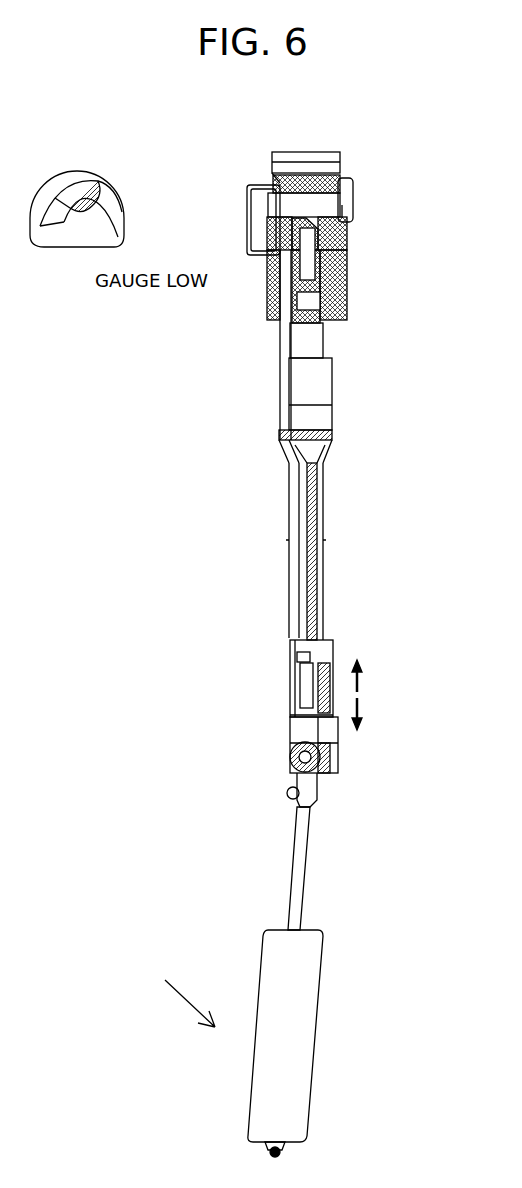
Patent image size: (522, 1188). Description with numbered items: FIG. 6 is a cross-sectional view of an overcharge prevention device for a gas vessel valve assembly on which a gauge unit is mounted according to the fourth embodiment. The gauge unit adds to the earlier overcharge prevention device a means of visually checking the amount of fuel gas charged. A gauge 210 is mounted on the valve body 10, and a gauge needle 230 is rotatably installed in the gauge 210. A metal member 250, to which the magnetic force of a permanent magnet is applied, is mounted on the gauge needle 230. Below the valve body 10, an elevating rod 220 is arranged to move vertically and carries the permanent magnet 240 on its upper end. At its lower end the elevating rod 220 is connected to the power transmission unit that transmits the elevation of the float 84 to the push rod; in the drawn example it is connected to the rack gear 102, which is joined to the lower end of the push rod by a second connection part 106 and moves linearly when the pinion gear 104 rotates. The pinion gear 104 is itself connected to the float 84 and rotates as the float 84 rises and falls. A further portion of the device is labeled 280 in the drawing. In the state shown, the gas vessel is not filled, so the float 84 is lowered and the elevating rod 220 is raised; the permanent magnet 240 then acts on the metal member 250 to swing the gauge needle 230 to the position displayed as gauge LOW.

The valve body 10 is at (293, 287).
The gauge 210 is at (262, 182).
The elevating rod 220 is at (278, 436).
The gauge needle 230 is at (120, 212).
The permanent magnet 240 is at (268, 235).
The metal member 250 is at (112, 240).
The lower body 280 is at (255, 273).
The second connection part 106 is at (333, 643).
The pinion gear 104 is at (287, 750).
The rack gear 102 is at (343, 743).
The float 84 is at (317, 983).